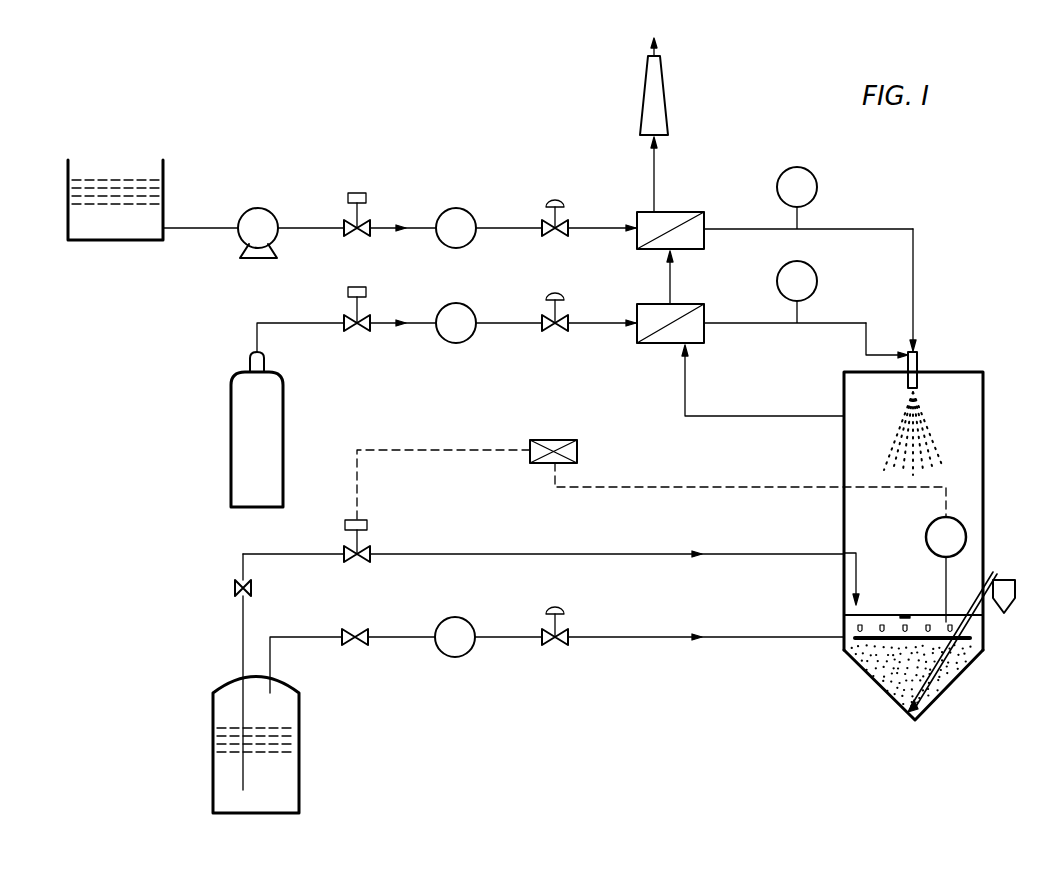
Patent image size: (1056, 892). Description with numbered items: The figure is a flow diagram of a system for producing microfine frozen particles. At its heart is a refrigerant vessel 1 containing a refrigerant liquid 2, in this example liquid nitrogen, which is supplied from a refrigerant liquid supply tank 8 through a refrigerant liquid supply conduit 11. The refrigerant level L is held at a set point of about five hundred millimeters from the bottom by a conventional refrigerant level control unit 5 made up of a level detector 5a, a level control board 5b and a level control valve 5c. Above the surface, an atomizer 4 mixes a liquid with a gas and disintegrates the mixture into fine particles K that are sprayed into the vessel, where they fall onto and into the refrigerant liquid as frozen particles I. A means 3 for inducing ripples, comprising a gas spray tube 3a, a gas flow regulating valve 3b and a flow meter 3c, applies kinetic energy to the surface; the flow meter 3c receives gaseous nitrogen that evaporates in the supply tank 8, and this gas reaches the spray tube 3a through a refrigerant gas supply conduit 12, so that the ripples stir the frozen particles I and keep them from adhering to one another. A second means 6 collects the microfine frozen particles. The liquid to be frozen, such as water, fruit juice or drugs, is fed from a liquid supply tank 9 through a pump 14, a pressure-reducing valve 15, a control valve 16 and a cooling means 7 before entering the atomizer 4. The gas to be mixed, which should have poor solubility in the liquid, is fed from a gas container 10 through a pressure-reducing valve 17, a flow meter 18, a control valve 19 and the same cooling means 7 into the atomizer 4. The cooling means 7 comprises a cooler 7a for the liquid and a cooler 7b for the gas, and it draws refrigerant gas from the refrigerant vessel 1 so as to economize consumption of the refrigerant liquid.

The refrigerant vessel 1 is at (985, 432).
The refrigerant liquid 2 is at (906, 718).
The means for inducing ripples 3 is at (889, 685).
The gas spray tube 3a is at (984, 638).
The gas flow regulating valve 3b is at (550, 612).
The flow meter 3c is at (447, 617).
The atomizer 4 is at (918, 365).
The refrigerant level control unit 5 is at (965, 533).
The level detector 5a is at (944, 578).
The level control board 5b is at (545, 440).
The level control valve 5c is at (368, 548).
The second means for collecting microfine frozen particles 6 is at (944, 672).
The cooling means 7 is at (694, 257).
The cooler for cooling liquid 7a is at (665, 212).
The cooler for cooling gas 7b is at (672, 304).
The refrigerant liquid supply tank 8 is at (299, 735).
The liquid supply tank 9 is at (163, 168).
The gas container 10 is at (283, 380).
The refrigerant liquid supply conduit 11 is at (452, 553).
The refrigerant gas supply conduit 12 is at (642, 636).
The pump 14 is at (255, 208).
The pressure-reducing valve 15 is at (358, 192).
The control valve 16 is at (554, 200).
The pressure-reducing valve 17 is at (348, 289).
The flow meter 18 is at (456, 303).
The control valve 19 is at (552, 299).
The fine particles K is at (925, 415).
The refrigerant level L is at (850, 612).
The frozen particles I is at (860, 664).